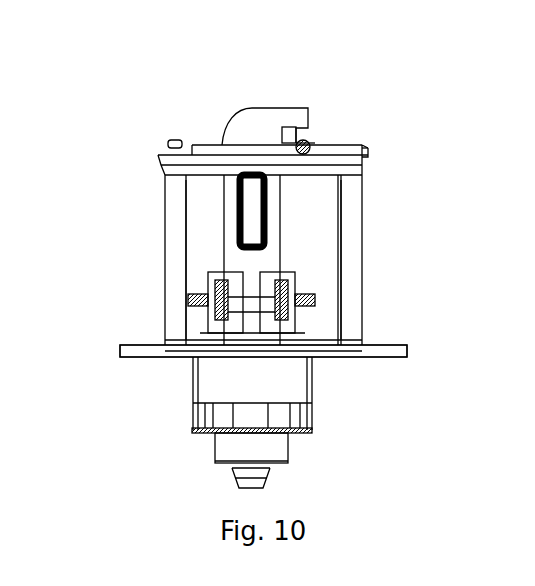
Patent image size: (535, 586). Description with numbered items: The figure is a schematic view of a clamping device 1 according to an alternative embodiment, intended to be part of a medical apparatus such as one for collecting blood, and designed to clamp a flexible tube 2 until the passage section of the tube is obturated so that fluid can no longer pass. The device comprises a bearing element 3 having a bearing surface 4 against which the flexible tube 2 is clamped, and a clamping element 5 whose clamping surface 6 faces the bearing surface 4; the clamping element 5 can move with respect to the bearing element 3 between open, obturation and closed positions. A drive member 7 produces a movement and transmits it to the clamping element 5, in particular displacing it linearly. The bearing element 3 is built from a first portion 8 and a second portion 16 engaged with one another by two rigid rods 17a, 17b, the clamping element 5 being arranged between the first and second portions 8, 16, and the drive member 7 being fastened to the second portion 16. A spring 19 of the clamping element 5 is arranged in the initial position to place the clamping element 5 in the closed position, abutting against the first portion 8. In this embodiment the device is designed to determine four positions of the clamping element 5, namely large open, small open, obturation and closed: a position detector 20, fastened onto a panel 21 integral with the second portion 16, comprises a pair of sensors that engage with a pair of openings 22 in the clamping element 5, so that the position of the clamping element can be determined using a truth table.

The clamping device 1 is at (254, 108).
The flexible tube 2 is at (306, 134).
The bearing element 3 is at (372, 155).
The bearing surface 4 is at (320, 147).
The clamping element 5 is at (222, 257).
The clamping surface 6 is at (311, 120).
The drive member 7 is at (270, 445).
The first portion 8 is at (160, 153).
The second portion 16 is at (207, 362).
The rigid rod 17a is at (350, 258).
The rigid rod 17b is at (183, 282).
The spring 19 is at (258, 222).
The position detector 20 is at (315, 300).
The panel 21 is at (305, 278).
The openings 22 is at (190, 302).